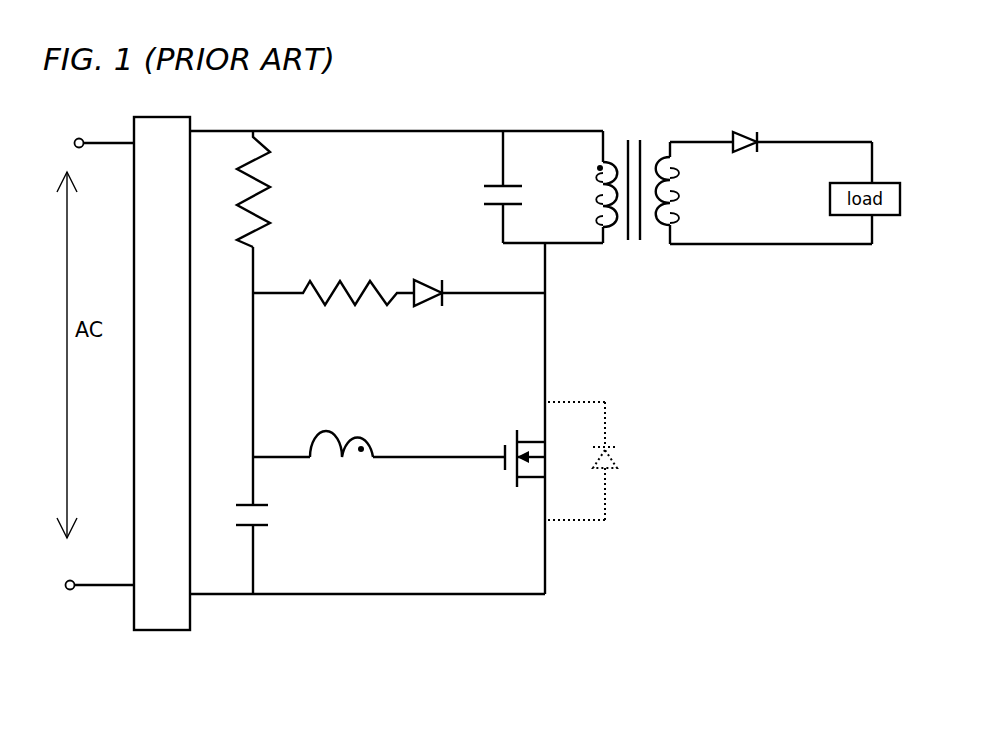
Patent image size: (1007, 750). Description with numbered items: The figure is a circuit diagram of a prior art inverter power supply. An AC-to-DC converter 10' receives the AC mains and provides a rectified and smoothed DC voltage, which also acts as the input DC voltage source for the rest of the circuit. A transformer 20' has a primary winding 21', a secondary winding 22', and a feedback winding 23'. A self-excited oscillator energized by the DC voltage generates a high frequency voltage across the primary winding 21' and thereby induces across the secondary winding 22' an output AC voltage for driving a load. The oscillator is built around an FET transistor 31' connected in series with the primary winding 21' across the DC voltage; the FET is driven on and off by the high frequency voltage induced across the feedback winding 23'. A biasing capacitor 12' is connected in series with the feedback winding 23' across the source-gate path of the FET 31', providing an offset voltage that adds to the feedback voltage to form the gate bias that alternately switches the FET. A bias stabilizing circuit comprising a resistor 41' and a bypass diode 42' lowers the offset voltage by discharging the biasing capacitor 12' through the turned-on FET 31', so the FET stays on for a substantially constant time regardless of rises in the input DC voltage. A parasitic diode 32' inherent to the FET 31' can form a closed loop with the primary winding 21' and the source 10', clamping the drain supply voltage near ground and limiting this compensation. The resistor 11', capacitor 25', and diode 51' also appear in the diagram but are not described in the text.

The AC-to-DC converter 10' is at (192, 373).
The resistor 11' is at (284, 189).
The biasing capacitor 12' is at (285, 530).
The transformer 20' is at (657, 159).
The primary winding 21' is at (584, 187).
The secondary winding 22' is at (694, 193).
The feedback winding 23' is at (379, 413).
The resonant capacitor 25' is at (514, 187).
The FET transistor 31' is at (499, 439).
The parasitic diode 32' is at (621, 445).
The resistor 41' is at (333, 263).
The bypass diode 42' is at (479, 264).
The rectifier diode 51' is at (771, 121).